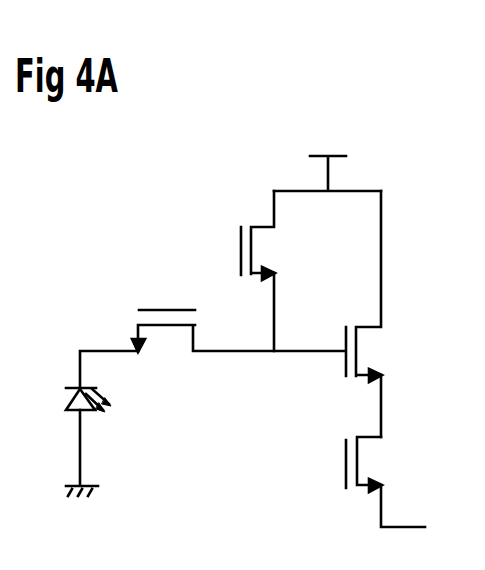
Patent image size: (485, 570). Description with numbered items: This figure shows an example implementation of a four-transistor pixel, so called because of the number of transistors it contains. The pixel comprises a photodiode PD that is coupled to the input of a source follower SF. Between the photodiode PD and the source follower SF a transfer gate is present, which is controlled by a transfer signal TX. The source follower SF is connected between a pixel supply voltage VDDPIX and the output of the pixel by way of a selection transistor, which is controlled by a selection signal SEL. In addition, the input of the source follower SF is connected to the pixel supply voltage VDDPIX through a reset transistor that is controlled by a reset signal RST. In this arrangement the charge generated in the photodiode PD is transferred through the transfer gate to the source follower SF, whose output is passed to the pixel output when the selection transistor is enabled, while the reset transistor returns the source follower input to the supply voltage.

The pixel supply voltage VDDPIX is at (327, 156).
The reset signal RST is at (241, 251).
The transfer signal TX is at (166, 310).
The photodiode PD is at (113, 423).
The source follower SF is at (378, 314).
The selection signal SEL is at (346, 462).